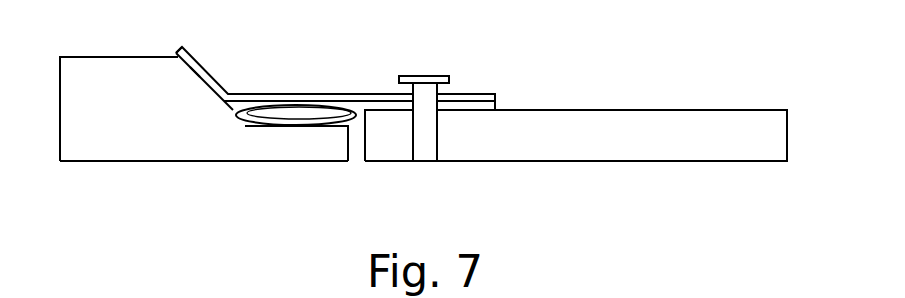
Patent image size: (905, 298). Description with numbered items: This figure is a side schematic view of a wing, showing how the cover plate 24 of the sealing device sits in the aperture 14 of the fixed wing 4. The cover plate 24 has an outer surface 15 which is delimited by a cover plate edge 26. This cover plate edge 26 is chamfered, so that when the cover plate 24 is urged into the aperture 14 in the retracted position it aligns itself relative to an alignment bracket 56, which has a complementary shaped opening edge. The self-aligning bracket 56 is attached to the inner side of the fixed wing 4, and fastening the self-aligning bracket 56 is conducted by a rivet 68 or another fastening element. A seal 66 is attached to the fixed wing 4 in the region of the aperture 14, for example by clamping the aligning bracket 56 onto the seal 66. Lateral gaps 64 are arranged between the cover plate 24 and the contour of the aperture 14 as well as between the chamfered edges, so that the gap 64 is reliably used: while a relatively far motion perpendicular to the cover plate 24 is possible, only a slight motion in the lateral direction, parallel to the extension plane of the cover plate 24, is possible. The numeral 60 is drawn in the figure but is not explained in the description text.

The fixed wing 4 is at (563, 150).
The aperture 14 is at (356, 180).
The outer surface 15 is at (92, 188).
The cover plate 24 is at (210, 140).
The cover plate edge 26 is at (186, 78).
The alignment bracket 56 is at (477, 94).
The plate end 60 is at (199, 60).
The lateral gap 64 is at (357, 117).
The seal 66 is at (317, 115).
The rivet 68 is at (423, 150).